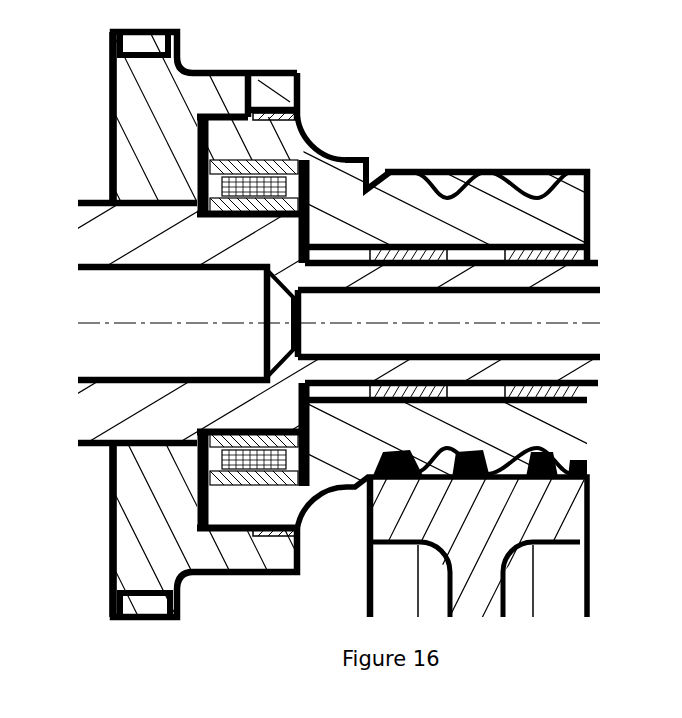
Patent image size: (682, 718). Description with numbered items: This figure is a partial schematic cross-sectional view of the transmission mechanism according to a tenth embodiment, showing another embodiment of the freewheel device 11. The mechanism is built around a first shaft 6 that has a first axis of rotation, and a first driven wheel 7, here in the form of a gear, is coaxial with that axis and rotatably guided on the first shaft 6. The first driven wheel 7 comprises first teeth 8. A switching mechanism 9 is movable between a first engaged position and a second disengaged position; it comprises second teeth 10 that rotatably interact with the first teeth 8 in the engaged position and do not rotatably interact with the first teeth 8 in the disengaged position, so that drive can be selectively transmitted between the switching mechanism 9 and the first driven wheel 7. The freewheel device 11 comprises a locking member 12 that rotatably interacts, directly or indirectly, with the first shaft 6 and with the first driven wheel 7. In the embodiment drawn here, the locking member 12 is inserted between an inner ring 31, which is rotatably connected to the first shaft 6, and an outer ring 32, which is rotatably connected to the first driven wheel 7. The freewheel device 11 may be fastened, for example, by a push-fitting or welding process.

The first shaft 6 is at (84, 234).
The first driven wheel 7 is at (503, 168).
The first teeth 8 is at (273, 85).
The switching mechanism 9 is at (102, 79).
The second teeth 10 is at (217, 88).
The freewheel device 11 is at (350, 53).
The locking member 12 is at (292, 152).
The inner ring 31 is at (340, 156).
The outer ring 32 is at (295, 108).